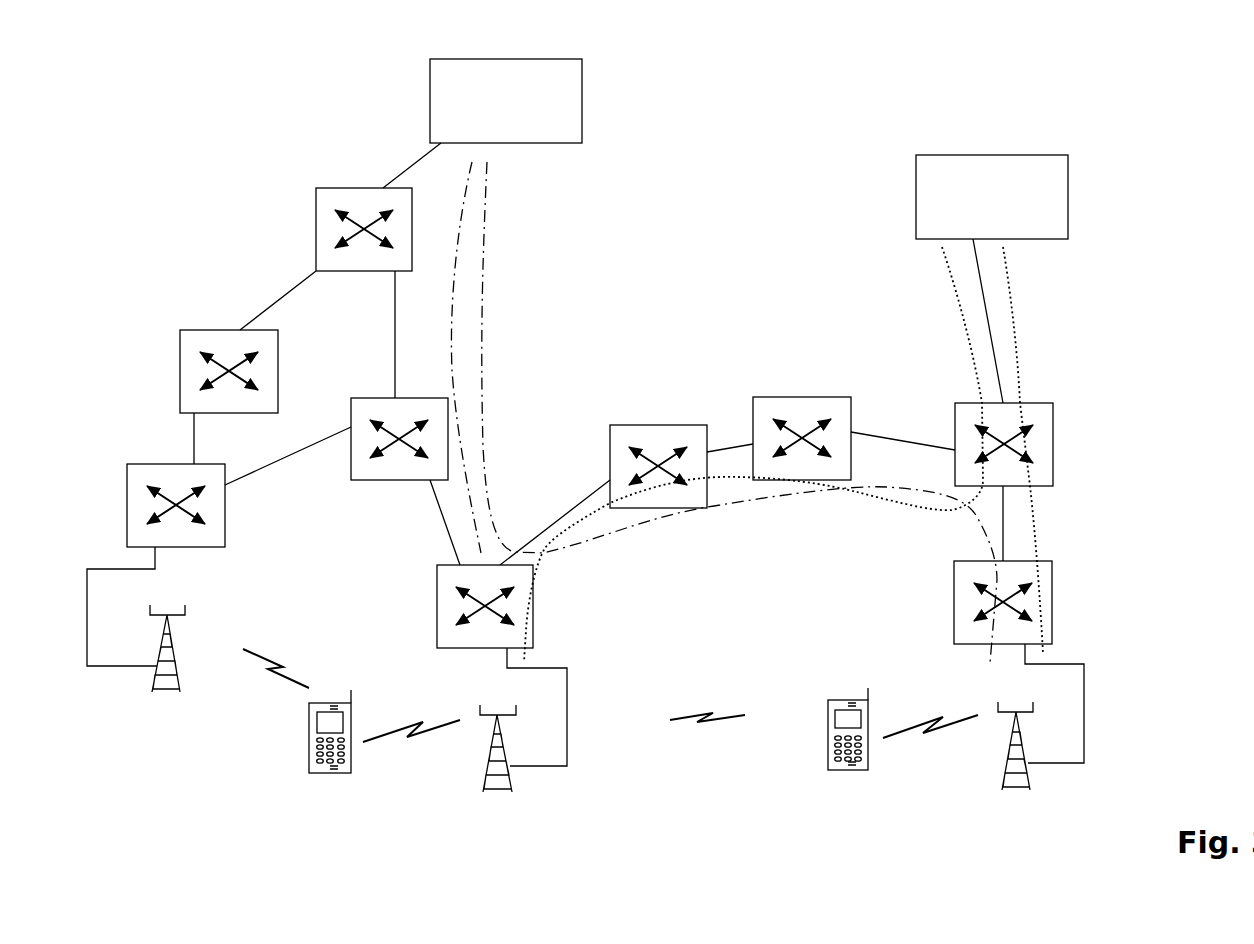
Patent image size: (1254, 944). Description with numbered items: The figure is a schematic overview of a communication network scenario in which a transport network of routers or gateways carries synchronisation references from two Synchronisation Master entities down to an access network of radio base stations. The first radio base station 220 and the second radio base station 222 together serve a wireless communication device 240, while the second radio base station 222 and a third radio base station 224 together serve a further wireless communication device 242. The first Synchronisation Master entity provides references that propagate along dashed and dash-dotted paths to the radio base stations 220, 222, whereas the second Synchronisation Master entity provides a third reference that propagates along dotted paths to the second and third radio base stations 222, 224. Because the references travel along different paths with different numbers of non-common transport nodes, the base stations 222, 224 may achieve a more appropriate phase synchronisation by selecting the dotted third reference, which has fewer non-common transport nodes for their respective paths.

The radio base station 220 is at (225, 697).
The second radio base station 222 is at (510, 780).
The third radio base station 224 is at (1030, 777).
The wireless communication device 240 is at (308, 773).
The further wireless communication device 242 is at (833, 767).